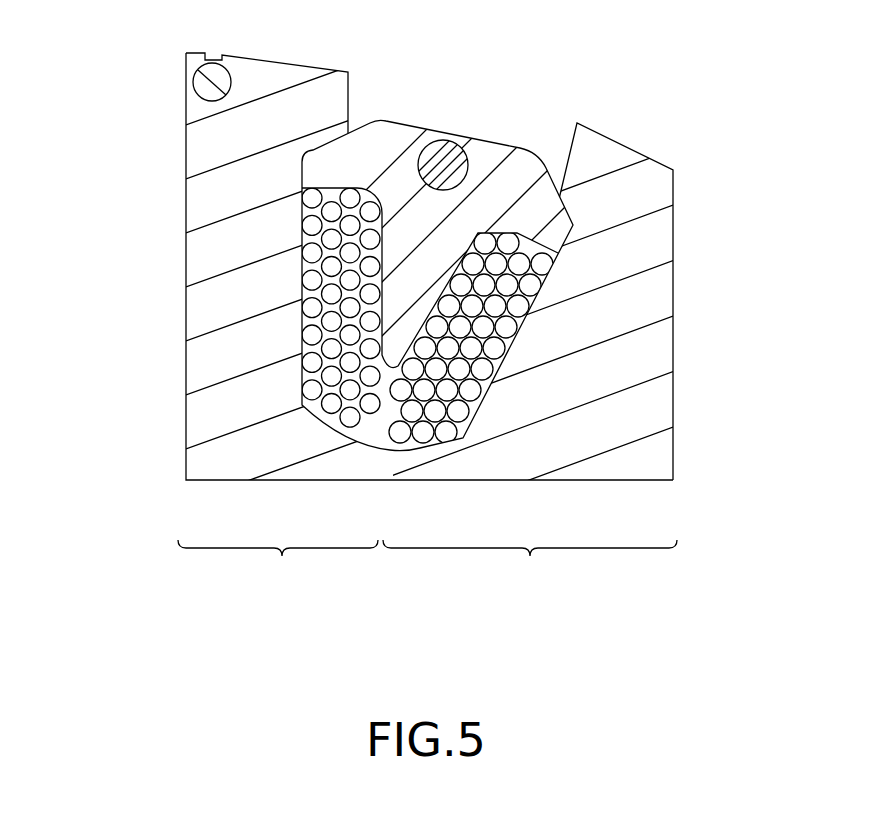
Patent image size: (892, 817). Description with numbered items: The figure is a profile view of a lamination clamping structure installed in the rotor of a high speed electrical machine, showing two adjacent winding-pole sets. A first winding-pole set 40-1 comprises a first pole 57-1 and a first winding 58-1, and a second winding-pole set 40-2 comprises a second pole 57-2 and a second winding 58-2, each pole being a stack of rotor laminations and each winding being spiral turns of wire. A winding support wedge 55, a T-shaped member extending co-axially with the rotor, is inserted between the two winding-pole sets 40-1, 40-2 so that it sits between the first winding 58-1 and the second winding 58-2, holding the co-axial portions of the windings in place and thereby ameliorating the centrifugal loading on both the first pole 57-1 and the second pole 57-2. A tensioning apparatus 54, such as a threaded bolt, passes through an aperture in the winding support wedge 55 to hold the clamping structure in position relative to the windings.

The tensioning apparatus 54 is at (436, 150).
The winding support wedge 55 is at (503, 158).
The first pole 57-1 is at (650, 337).
The second pole 57-2 is at (213, 357).
The first winding 58-1 is at (455, 433).
The second winding 58-2 is at (350, 416).
The first winding-pole set 40-1 is at (530, 564).
The second winding-pole set 40-2 is at (278, 564).